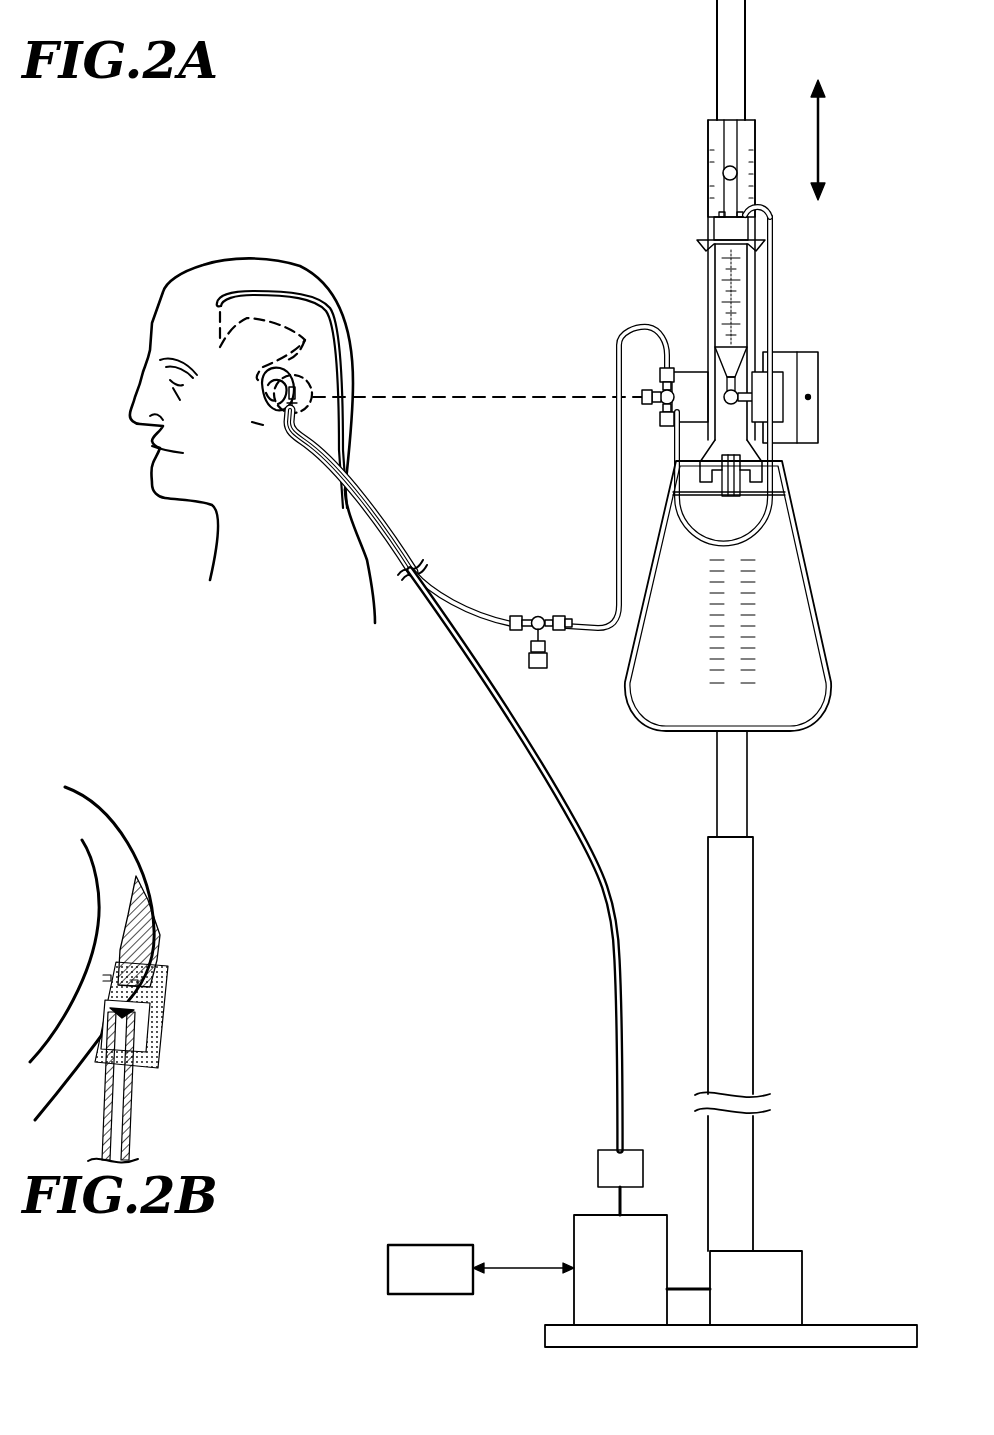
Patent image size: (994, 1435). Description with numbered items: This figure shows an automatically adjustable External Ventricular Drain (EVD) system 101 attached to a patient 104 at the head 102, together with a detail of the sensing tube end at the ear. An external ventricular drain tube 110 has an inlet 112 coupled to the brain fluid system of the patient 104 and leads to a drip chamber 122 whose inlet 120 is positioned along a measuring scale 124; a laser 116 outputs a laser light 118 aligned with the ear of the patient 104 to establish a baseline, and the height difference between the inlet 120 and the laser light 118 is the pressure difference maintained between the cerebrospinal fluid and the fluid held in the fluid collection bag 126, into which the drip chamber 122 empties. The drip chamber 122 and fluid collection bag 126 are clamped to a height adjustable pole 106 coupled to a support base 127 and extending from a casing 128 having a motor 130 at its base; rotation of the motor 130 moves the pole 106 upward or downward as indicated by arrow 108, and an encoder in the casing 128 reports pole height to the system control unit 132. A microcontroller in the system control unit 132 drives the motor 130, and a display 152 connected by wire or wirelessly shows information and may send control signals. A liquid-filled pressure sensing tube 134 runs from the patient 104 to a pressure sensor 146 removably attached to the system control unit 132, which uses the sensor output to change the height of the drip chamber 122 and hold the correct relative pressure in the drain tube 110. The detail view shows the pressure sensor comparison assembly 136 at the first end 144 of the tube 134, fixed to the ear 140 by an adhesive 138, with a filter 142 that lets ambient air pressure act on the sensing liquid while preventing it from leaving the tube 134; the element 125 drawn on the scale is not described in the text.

In FIG. 2A, the External Ventricular Drain (EVD) system 101 is at (397, 135).
In FIG. 2A, the head 102 is at (228, 268).
In FIG. 2A, the patient 104 is at (300, 257).
In FIG. 2A, the height adjustable pole 106 is at (742, 35).
In FIG. 2A, the arrow 108 is at (818, 140).
In FIG. 2A, the external ventricular drain tube 110 is at (370, 481).
In FIG. 2A, the inlet 112 is at (220, 347).
In FIG. 2A, the laser 116 is at (810, 380).
In FIG. 2A, the laser light 118 is at (549, 412).
In FIG. 2A, the inlet of the drip chamber 120 is at (740, 250).
In FIG. 2A, the drip chamber 122 is at (742, 305).
In FIG. 2A, the measuring scale 124 is at (710, 160).
In FIG. 2A, the indicator 125 is at (724, 175).
In FIG. 2A, the fluid collection bag 126 is at (792, 600).
In FIG. 2A, the support base 127 is at (874, 1330).
In FIG. 2A, the casing 128 is at (748, 896).
In FIG. 2A, the motor 130 is at (793, 1260).
In FIG. 2A, the system control unit 132 is at (577, 1225).
In FIG. 2A, the pressure sensing tube 134 is at (487, 680).
In FIG. 2B, the pressure sensing tube 134 is at (127, 1130).
In FIG. 2A, the pressure sensor comparison assembly 136 is at (312, 372).
In FIG. 2B, the pressure sensor comparison assembly 136 is at (178, 912).
In FIG. 2B, the adhesive 138 is at (145, 945).
In FIG. 2A, the ear 140 is at (262, 423).
In FIG. 2B, the ear 140 is at (115, 832).
In FIG. 2B, the filter 142 is at (160, 1000).
In FIG. 2A, the first end 144 is at (300, 397).
In FIG. 2B, the first end 144 is at (130, 1016).
In FIG. 2A, the pressure sensor 146 is at (598, 1165).
In FIG. 2A, the display 152 is at (440, 1245).